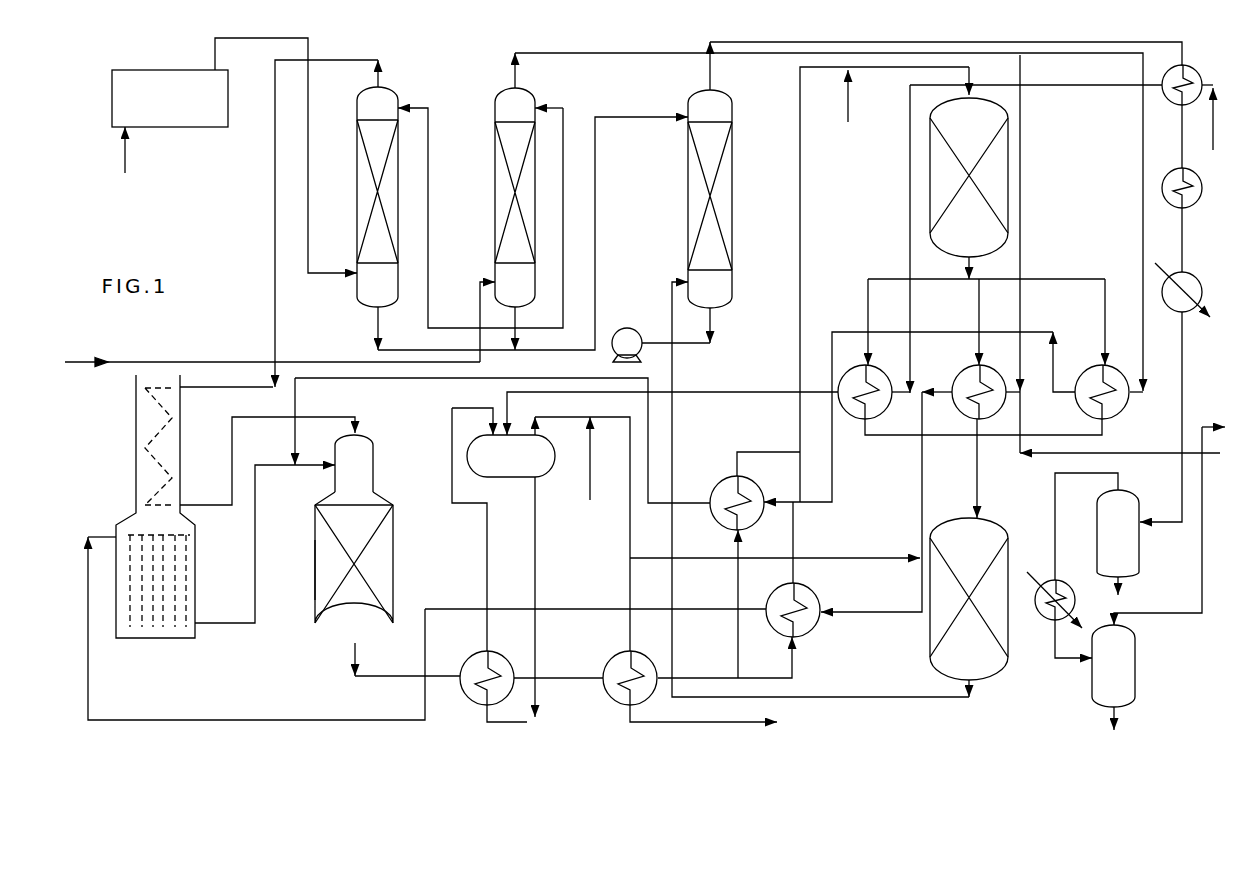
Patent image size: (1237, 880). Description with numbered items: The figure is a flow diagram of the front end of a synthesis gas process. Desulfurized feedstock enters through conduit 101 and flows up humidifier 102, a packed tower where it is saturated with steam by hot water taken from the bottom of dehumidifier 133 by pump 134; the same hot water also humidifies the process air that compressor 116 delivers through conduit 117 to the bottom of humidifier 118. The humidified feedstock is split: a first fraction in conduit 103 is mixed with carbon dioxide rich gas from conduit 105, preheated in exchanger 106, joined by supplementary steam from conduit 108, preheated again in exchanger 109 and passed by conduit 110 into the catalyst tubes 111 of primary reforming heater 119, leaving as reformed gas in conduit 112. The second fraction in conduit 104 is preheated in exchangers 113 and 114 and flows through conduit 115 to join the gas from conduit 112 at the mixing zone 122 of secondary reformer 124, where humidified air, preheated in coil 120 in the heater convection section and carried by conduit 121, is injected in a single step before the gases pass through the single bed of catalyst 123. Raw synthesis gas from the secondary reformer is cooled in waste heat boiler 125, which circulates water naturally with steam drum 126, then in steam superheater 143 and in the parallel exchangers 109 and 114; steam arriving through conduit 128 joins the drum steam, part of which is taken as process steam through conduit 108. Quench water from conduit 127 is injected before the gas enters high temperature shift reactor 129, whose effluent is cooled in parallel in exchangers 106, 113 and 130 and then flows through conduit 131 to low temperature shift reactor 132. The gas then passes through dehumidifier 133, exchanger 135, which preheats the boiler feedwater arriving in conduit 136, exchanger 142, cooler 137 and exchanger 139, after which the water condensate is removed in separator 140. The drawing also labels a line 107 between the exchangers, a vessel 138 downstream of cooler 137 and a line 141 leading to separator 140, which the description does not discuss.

The conduit 101 is at (272, 351).
The humidifier 102 is at (492, 91).
The conduit 103 is at (1027, 212).
The conduit 104 is at (1140, 243).
The conduit 105 is at (1122, 441).
The exchanger 106 is at (971, 349).
The line 107 is at (943, 272).
The conduit 108 is at (775, 550).
The exchanger 109 is at (818, 628).
The conduit 110 is at (427, 628).
The catalyst tubes 111 is at (178, 592).
The conduit 112 is at (265, 501).
The exchanger 113 is at (946, 390).
The exchanger 114 is at (712, 478).
The conduit 115 is at (442, 383).
The compressor 116 is at (168, 139).
The conduit 117 is at (286, 144).
The humidifier 118 is at (405, 84).
The primary reforming heater 119 is at (122, 517).
The coil 120 is at (150, 425).
The conduit 121 is at (224, 456).
The mixing zone 122 is at (365, 460).
The bed of catalyst 123 is at (395, 545).
The secondary reformer 124 is at (314, 548).
The waste heat boiler 125 is at (464, 696).
The steam drum 126 is at (541, 562).
The conduit 127 is at (849, 112).
The conduit 128 is at (580, 474).
The shift reactor 129 is at (928, 248).
The exchanger 130 is at (804, 357).
The conduit 131 is at (975, 480).
The shift reactor 132 is at (925, 665).
The dehumidifier 133 is at (734, 230).
The pump 134 is at (629, 331).
The exchanger 135 is at (1196, 68).
The conduit 136 is at (1200, 148).
The cooler 137 is at (1175, 310).
The separator 138 is at (1097, 534).
The exchanger 139 is at (1085, 584).
The separator 140 is at (1113, 677).
The line 141 is at (1158, 526).
The exchanger 142 is at (1197, 212).
The steam superheater 143 is at (613, 712).